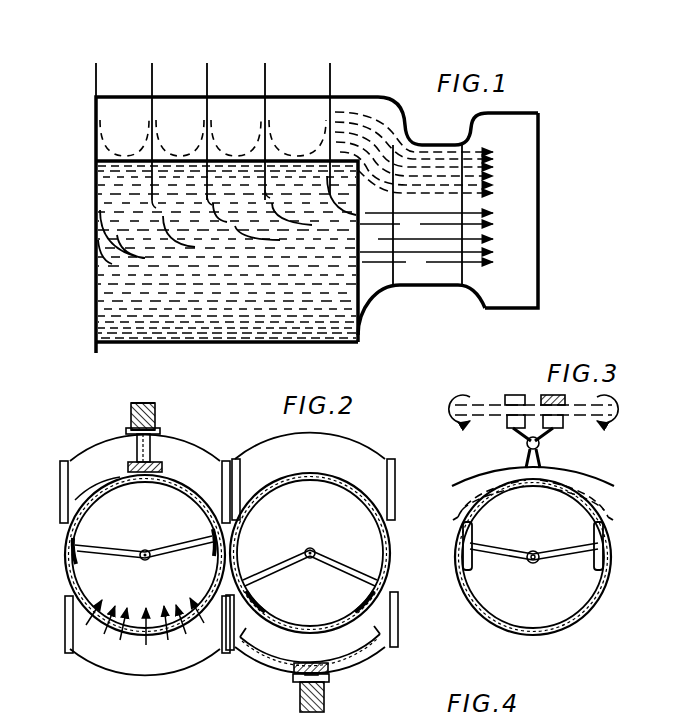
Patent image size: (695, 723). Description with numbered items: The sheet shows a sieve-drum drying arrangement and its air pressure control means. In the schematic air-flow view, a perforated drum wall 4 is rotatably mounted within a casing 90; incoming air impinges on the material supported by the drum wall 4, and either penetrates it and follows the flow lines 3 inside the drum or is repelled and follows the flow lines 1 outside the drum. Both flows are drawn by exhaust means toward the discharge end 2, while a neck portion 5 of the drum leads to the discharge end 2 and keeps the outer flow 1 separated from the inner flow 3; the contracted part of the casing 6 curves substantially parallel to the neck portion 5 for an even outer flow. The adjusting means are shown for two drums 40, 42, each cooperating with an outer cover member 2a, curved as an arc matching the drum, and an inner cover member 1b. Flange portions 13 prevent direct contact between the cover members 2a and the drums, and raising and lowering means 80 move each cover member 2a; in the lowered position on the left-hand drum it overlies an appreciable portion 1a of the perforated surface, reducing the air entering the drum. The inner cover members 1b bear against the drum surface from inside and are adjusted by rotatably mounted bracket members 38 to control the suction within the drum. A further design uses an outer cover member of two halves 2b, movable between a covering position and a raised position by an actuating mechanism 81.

In FIG. 1, the casing 90 is at (292, 96).
In FIG. 1, the air flow lines outside the drum 1 is at (372, 123).
In FIG. 1, the discharge end 2 is at (518, 287).
In FIG. 1, the air flow lines within the drum 3 is at (133, 250).
In FIG. 1, the perforated drum wall 4 is at (236, 345).
In FIG. 1, the neck portion 5 is at (374, 292).
In FIG. 1, the casing contracted part 6 is at (426, 143).
In FIG. 2, the covered portion of perforated drum surface 1a is at (130, 493).
In FIG. 3, the covered portion of perforated drum surface 1a is at (525, 484).
In FIG. 2, the inner cover member 1b is at (208, 546).
In FIG. 3, the inner cover member 1b is at (598, 566).
In FIG. 2, the outer cover member 2a is at (178, 456).
In FIG. 3, the cover member halves 2b is at (492, 468).
In FIG. 2, the flange portions 13 is at (70, 508).
In FIG. 2, the bracket members 38 is at (190, 545).
In FIG. 2, the drum 40 is at (70, 590).
In FIG. 2, the drum 42 is at (387, 531).
In FIG. 2, the raising and lowering means 80 is at (157, 457).
In FIG. 3, the actuating mechanism 81 is at (575, 430).